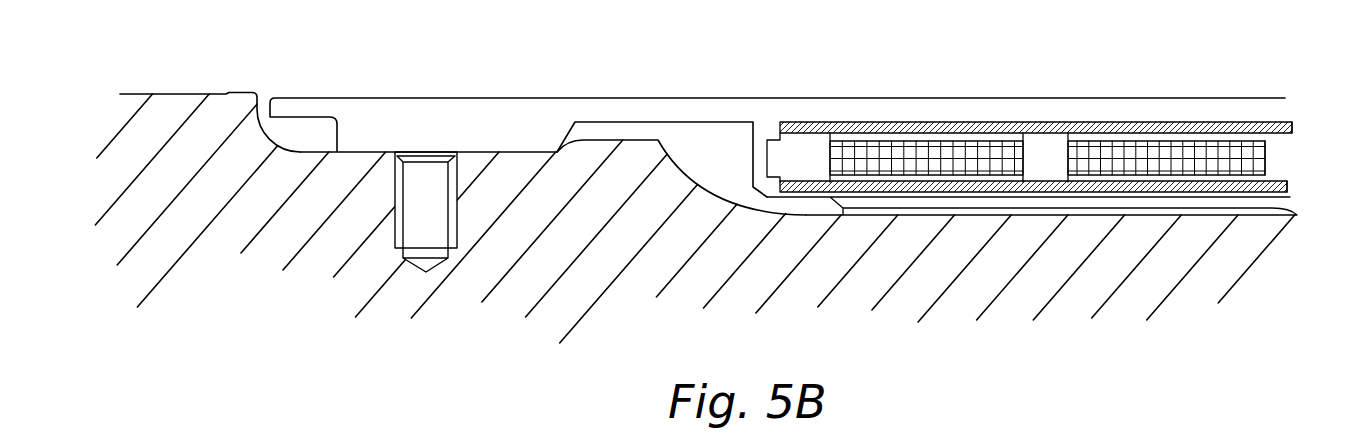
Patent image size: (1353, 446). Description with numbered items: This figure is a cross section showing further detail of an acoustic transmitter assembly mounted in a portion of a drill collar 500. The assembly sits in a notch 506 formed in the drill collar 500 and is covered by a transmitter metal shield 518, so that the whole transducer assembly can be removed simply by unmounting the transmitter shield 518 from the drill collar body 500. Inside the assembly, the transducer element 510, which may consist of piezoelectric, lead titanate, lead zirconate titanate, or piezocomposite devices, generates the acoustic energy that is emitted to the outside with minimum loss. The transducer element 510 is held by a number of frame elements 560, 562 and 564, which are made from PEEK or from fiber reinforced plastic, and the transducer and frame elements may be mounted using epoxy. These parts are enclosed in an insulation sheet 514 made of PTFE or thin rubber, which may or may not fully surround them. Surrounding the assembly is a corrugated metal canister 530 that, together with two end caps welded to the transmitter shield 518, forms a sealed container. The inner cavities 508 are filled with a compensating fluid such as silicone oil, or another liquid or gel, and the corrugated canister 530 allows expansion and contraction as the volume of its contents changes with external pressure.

The drill collar 500 is at (205, 169).
The notch 506 is at (728, 158).
The inner cavities 508 is at (1103, 128).
The transducer element 510 is at (933, 153).
The insulation sheet 514 is at (860, 124).
The transmitter metal shield 518 is at (540, 132).
The corrugated metal canister 530 is at (1072, 215).
The frame element 560 is at (797, 172).
The frame element 562 is at (1053, 148).
The frame element 564 is at (1275, 141).